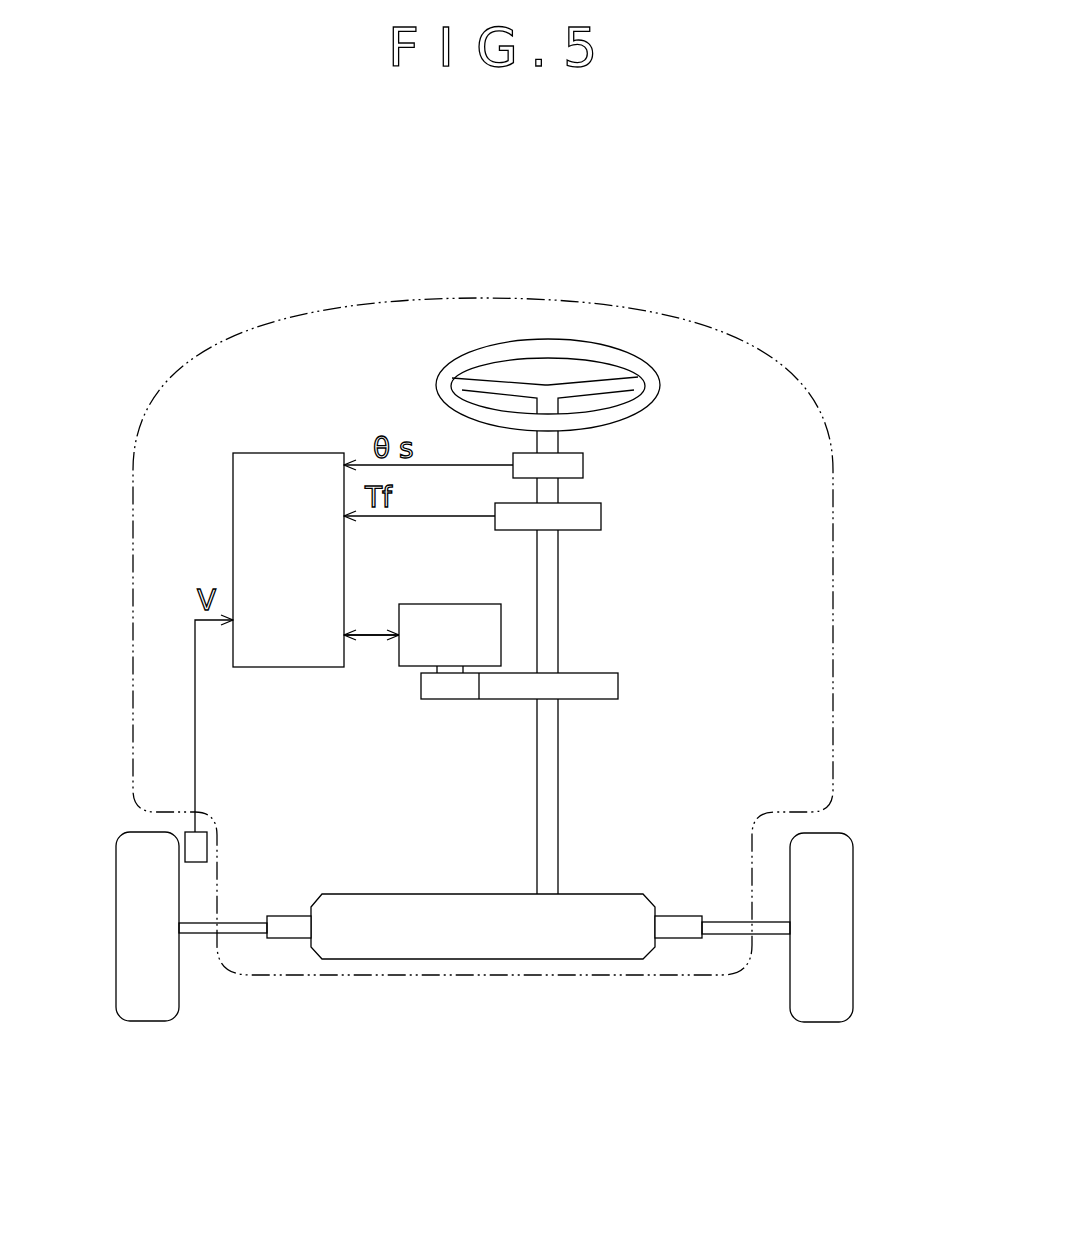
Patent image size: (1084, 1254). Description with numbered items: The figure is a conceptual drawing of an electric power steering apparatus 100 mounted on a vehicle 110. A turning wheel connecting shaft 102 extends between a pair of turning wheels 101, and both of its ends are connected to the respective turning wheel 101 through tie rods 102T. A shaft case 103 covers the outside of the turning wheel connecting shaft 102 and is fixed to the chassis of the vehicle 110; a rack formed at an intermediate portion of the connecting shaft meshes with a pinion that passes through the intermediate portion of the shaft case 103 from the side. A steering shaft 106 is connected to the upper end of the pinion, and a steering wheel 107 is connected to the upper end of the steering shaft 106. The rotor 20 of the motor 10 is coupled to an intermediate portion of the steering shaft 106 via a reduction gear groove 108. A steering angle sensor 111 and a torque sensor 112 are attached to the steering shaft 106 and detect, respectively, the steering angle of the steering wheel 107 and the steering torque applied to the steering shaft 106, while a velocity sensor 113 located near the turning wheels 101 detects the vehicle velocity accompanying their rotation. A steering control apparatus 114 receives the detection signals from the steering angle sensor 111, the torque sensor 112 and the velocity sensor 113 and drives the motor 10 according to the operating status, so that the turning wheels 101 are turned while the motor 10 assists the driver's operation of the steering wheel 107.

The electric power steering apparatus 100 is at (660, 568).
The vehicle 110 is at (692, 330).
The steering wheel 107 is at (660, 400).
The steering angle sensor 111 is at (583, 465).
The torque sensor 112 is at (601, 516).
The steering shaft 106 is at (558, 608).
The steering control apparatus 114 is at (233, 497).
The motor 10 is at (396, 655).
The rotor 20 is at (437, 668).
The reduction gear groove 108 is at (456, 707).
The velocity sensor 113 is at (207, 845).
The shaft case 103 is at (370, 960).
The turning wheel connecting shaft 102 is at (288, 938).
The tie rod 102T is at (209, 933).
The turning wheel 101 is at (147, 1021).